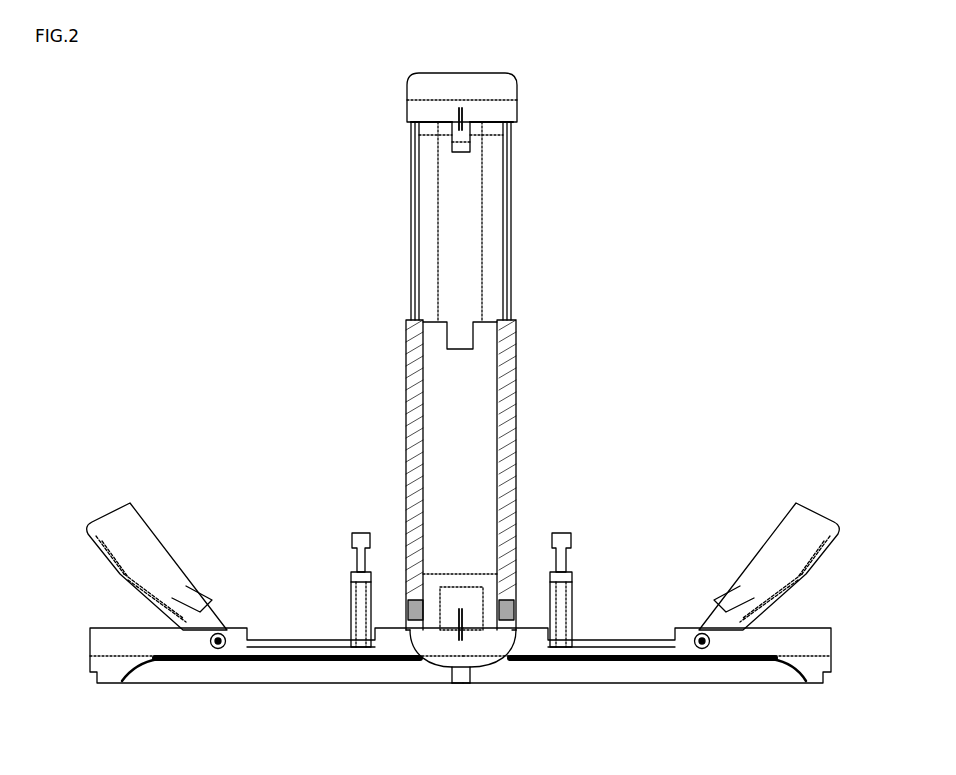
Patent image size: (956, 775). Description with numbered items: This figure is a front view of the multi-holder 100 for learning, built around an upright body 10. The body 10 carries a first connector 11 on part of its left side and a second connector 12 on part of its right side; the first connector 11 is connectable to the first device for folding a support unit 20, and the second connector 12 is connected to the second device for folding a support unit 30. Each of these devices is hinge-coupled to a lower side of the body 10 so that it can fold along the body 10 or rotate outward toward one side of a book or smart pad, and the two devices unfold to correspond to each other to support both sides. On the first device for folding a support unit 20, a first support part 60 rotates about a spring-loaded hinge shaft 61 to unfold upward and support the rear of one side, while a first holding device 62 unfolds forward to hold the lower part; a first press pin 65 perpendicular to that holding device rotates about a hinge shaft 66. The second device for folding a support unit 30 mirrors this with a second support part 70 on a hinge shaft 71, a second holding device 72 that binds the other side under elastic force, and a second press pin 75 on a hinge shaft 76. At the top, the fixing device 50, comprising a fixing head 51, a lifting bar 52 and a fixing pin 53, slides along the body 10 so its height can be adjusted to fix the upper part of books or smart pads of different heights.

The multi-holder for learning 100 is at (222, 142).
The body 10 is at (512, 340).
The first connector 11 is at (503, 634).
The second connector 12 is at (410, 634).
The first device for folding a support unit 20 is at (808, 648).
The second device for folding a support unit 30 is at (112, 648).
The fixing device 50 is at (320, 93).
The fixing head 51 is at (412, 91).
The lifting bar 52 is at (410, 160).
The fixing pin 53 is at (410, 132).
The first support part 60 is at (808, 525).
The hinge shaft 61 is at (702, 650).
The first holding device 62 is at (566, 607).
The first press pin 65 is at (562, 532).
The hinge shaft 66 is at (572, 578).
The second support part 70 is at (118, 525).
The hinge shaft 71 is at (217, 650).
The second holding device 72 is at (352, 609).
The second press pin 75 is at (361, 532).
The hinge shaft 76 is at (350, 578).